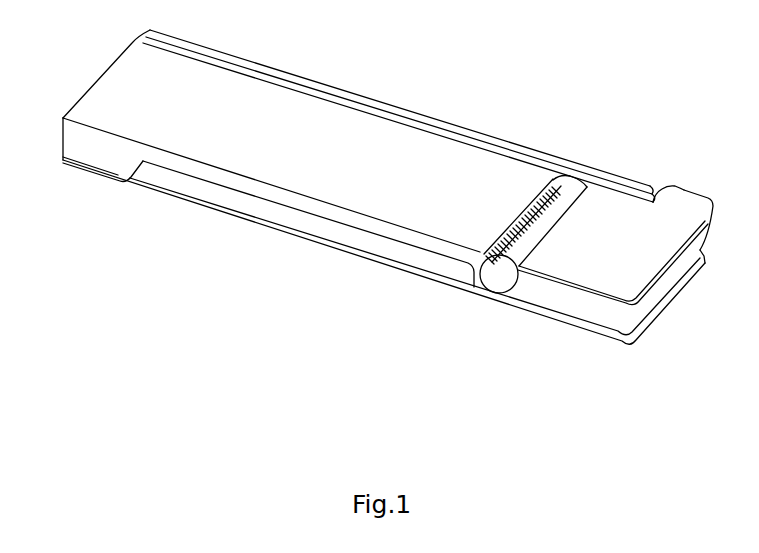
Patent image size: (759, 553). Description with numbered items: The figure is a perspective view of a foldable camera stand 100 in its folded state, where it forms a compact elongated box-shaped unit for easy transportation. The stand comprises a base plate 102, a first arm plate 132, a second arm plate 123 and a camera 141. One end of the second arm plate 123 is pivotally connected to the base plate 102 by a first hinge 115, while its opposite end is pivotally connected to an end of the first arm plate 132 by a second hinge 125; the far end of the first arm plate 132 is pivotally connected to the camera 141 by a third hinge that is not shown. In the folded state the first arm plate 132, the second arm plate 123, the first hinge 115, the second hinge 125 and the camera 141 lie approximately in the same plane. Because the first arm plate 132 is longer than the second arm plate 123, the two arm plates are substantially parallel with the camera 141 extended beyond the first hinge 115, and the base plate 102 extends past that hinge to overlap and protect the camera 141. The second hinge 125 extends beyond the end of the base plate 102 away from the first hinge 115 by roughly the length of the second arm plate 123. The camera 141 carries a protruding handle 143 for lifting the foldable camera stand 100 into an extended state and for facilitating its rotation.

The foldable camera stand 100 is at (377, 202).
The base plate 102 is at (197, 188).
The first hinge 115 is at (500, 278).
The second arm plate 123 is at (348, 180).
The second hinge 125 is at (88, 148).
The first arm plate 132 is at (367, 100).
The camera 141 is at (623, 262).
The protruding handle 143 is at (683, 199).